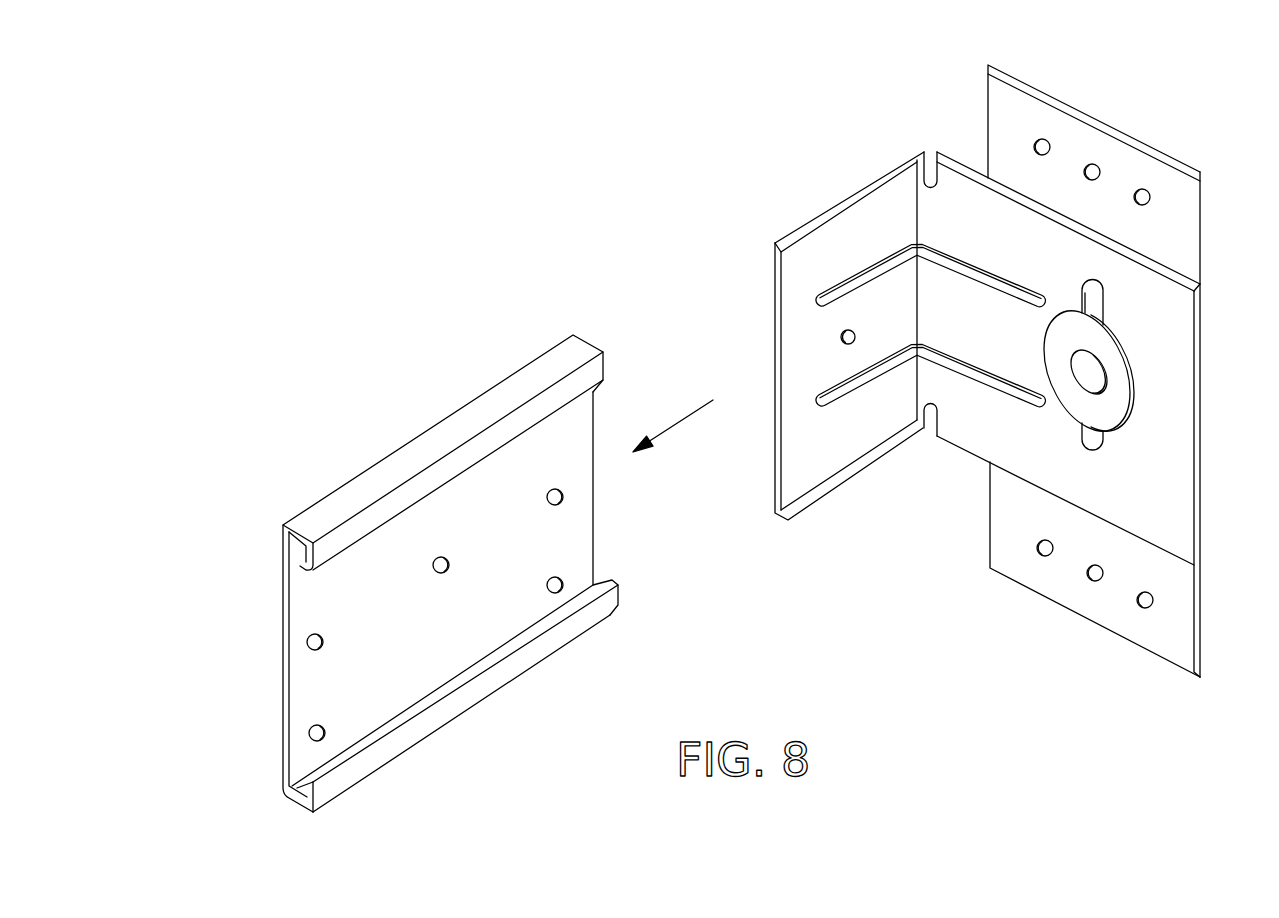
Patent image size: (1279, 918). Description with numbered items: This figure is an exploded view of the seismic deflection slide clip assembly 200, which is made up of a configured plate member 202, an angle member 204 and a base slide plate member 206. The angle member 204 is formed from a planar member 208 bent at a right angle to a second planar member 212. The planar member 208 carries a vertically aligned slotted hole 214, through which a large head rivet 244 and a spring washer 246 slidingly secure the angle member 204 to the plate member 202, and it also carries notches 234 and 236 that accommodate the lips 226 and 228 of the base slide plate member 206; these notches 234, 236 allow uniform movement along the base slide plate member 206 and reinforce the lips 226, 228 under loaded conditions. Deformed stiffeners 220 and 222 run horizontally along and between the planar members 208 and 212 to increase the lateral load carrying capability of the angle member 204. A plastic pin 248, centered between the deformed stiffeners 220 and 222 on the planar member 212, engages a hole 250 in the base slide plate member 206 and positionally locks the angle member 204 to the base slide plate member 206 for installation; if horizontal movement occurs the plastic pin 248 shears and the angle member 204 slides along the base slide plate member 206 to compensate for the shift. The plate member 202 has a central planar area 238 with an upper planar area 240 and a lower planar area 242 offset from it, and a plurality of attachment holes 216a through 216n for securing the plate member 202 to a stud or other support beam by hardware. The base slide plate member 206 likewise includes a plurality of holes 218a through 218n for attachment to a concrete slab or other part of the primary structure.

The seismic deflection slide clip assembly 200 is at (541, 189).
The configured plate member 202 is at (1057, 650).
The angle member 204 is at (914, 472).
The base slide plate member 206 is at (361, 418).
The planar member 208 is at (1172, 512).
The planar member 212 is at (909, 323).
The vertically aligned slotted hole 214 is at (1103, 296).
The hole 216a is at (1043, 139).
The hole 216n is at (1147, 607).
The hole 218a is at (303, 558).
The hole 218n is at (563, 585).
The deformed stiffener 220 is at (863, 276).
The deformed stiffener 222 is at (833, 402).
The lip 226 is at (337, 543).
The lip 228 is at (328, 788).
The notch 234 is at (929, 170).
The notch 236 is at (941, 416).
The central planar area 238 is at (1199, 319).
The upper planar area 240 is at (1123, 184).
The lower planar area 242 is at (1047, 582).
The large head rivet 244 is at (1097, 383).
The spring washer 246 is at (1126, 386).
The plastic pin 248 is at (841, 338).
The hole 250 is at (449, 570).